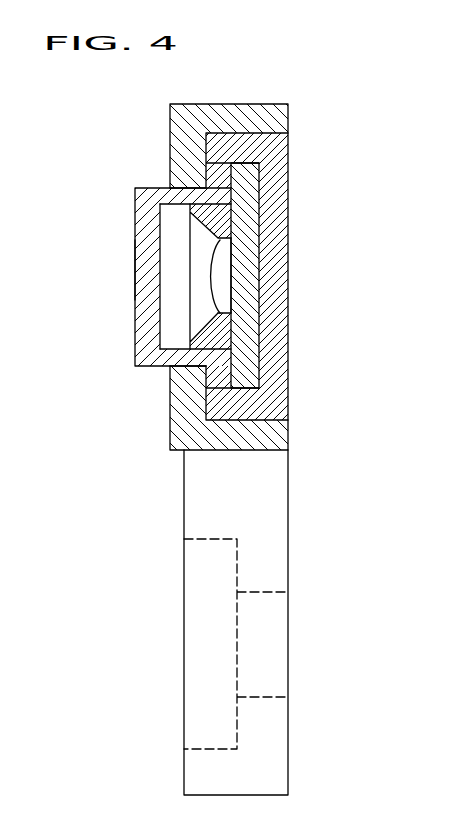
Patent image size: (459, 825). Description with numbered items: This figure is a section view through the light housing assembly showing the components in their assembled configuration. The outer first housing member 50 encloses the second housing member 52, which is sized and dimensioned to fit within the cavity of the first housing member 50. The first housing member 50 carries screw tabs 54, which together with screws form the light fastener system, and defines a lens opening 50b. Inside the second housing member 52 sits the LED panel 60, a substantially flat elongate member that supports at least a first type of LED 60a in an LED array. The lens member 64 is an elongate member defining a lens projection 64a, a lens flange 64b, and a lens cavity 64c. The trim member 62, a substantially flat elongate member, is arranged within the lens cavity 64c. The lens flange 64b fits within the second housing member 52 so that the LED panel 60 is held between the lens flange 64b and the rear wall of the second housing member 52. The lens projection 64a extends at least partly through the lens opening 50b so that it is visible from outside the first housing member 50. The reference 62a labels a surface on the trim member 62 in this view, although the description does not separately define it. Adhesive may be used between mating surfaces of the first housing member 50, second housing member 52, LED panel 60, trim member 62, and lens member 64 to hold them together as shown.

The first housing member 50 is at (259, 99).
The lens opening 50b is at (183, 349).
The second housing member 52 is at (291, 171).
The screw tabs 54 is at (276, 549).
The LED panel 60 is at (250, 255).
The first type of LED 60a is at (220, 278).
The trim member 62 is at (224, 232).
The light emitting surface 62a is at (231, 311).
The lens member 64 is at (133, 226).
The lens projection 64a is at (146, 264).
The lens flange 64b is at (178, 165).
The lens cavity 64c is at (173, 291).